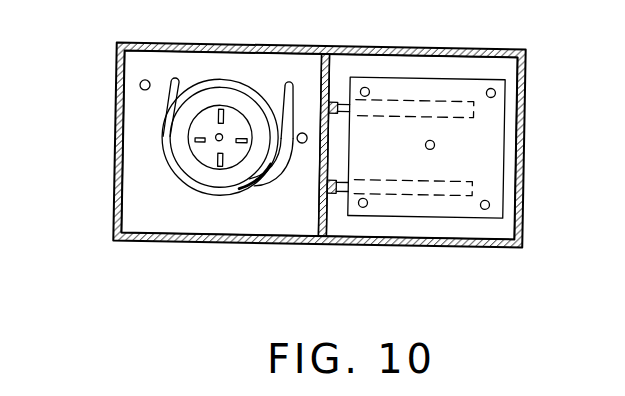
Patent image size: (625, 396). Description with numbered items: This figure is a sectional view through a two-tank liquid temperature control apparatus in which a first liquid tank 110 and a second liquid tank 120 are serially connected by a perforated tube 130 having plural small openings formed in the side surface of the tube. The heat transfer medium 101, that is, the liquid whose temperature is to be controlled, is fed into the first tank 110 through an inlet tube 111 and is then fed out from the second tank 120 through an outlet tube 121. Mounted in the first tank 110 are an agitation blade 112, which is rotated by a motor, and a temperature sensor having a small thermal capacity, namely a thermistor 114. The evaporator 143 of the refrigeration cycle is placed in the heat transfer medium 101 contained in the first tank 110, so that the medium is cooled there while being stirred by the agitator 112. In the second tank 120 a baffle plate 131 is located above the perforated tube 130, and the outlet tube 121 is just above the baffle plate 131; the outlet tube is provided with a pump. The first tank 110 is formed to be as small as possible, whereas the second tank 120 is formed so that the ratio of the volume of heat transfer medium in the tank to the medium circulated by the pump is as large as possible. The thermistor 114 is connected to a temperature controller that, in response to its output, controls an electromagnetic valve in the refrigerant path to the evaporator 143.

The heat transfer medium 101 is at (135, 138).
The first liquid tank 110 is at (114, 205).
The inlet tube 111 is at (139, 85).
The agitation blade 112 is at (236, 152).
The thermistor 114 is at (302, 145).
The second liquid tank 120 is at (520, 228).
The outlet tube 121 is at (435, 144).
The perforated tube 130 is at (331, 197).
The baffle plate 131 is at (441, 80).
The evaporator 143 is at (172, 169).